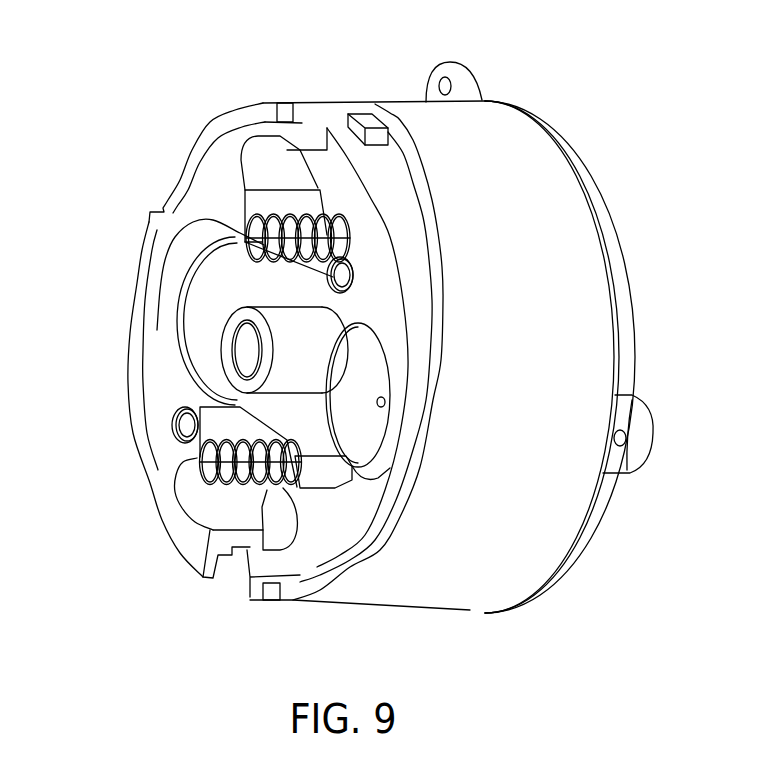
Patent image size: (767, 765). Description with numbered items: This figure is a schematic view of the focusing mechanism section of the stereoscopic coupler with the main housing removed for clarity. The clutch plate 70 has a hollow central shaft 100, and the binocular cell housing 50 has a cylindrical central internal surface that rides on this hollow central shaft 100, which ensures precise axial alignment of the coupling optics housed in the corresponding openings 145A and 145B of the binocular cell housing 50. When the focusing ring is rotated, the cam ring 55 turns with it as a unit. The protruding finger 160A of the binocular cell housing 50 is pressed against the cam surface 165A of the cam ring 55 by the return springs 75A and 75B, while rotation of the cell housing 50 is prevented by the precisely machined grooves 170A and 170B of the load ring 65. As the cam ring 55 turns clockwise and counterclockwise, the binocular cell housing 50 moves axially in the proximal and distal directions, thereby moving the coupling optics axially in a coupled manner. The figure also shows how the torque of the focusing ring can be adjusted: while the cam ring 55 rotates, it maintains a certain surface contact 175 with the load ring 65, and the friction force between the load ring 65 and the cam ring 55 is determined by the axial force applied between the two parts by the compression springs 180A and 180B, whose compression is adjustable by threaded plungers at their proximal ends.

The binocular cell housing 50 is at (345, 320).
The cam ring 55 is at (447, 573).
The load ring 65 is at (140, 245).
The clutch plate 70 is at (617, 222).
The return spring 75A is at (243, 240).
The return spring 75B is at (207, 477).
The hollow central shaft 100 is at (292, 362).
The opening 145A is at (197, 347).
The opening 145B is at (345, 413).
The protruding finger 160A is at (377, 127).
The cam surface 165A is at (437, 232).
The groove 170A is at (300, 132).
The groove 170B is at (218, 545).
The surface contact 175 is at (410, 443).
The compression spring 180A is at (328, 280).
The compression spring 180B is at (172, 430).